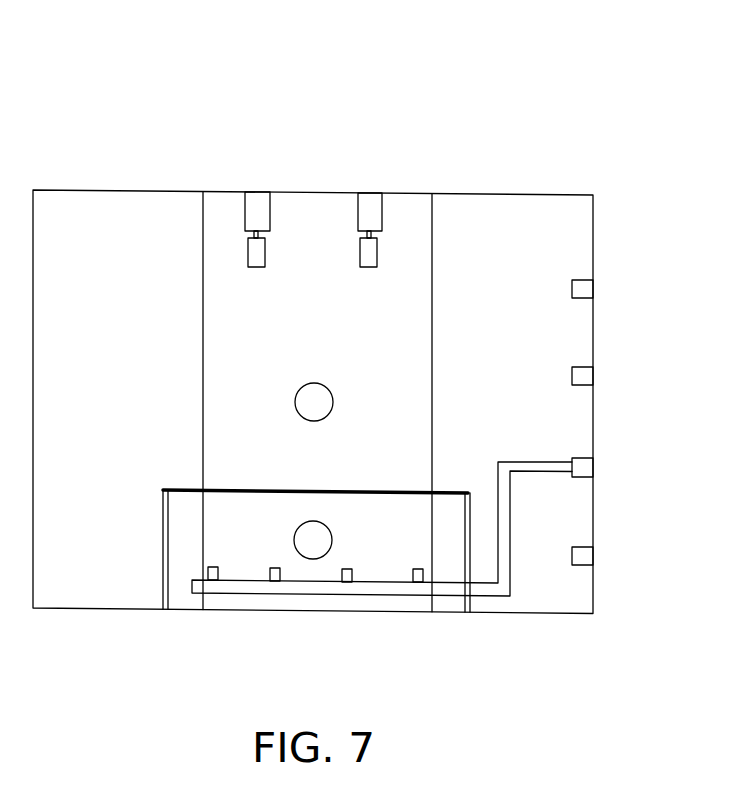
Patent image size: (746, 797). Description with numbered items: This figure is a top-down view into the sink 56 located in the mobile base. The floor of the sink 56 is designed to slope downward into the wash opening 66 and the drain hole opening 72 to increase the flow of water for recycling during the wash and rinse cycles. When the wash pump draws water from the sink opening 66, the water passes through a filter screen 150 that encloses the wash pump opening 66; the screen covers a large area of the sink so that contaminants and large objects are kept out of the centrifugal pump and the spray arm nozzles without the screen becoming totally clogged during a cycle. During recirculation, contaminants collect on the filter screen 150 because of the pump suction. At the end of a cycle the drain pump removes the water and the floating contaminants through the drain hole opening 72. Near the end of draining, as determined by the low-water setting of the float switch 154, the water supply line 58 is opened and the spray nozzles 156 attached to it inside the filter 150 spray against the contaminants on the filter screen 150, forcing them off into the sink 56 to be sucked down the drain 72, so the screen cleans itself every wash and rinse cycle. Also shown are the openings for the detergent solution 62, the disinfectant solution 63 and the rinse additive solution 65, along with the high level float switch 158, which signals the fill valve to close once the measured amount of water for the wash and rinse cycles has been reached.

The sink 56 is at (313, 334).
The water supply line 58 is at (453, 534).
The detergent solution opening 62 is at (643, 528).
The disinfectant solution opening 63 is at (637, 343).
The rinse additive solution opening 65 is at (637, 249).
The sink opening 66 is at (305, 602).
The drain hole opening 72 is at (438, 272).
The filter screen 150 is at (316, 586).
The float switch 154 is at (426, 134).
The spray nozzles 156 is at (366, 612).
The high level float switch 158 is at (316, 149).